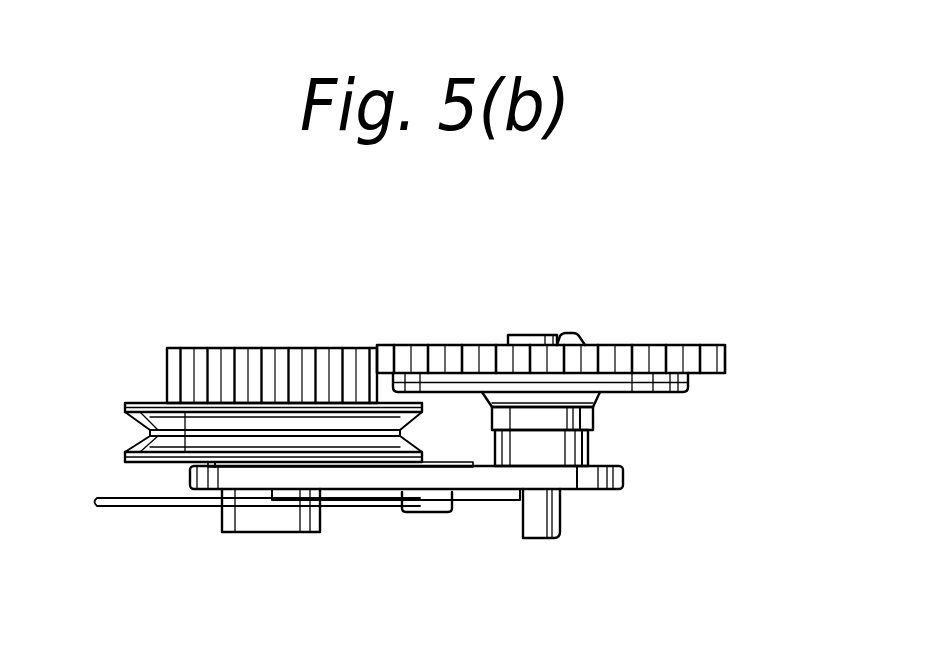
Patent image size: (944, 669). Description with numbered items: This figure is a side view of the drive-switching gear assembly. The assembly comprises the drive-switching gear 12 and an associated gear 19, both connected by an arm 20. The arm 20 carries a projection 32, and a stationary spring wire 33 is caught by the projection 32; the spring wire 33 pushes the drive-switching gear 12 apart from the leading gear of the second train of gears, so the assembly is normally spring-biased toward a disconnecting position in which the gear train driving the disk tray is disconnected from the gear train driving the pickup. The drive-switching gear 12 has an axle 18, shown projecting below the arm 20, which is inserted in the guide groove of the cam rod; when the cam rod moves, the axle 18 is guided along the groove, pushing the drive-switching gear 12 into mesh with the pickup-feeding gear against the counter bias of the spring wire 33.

The drive-switching gear 12 is at (638, 353).
The axle 18 is at (538, 522).
The associated gear 19 is at (302, 357).
The arm 20 is at (373, 480).
The projection 32 is at (433, 515).
The stationary spring wire 33 is at (335, 508).